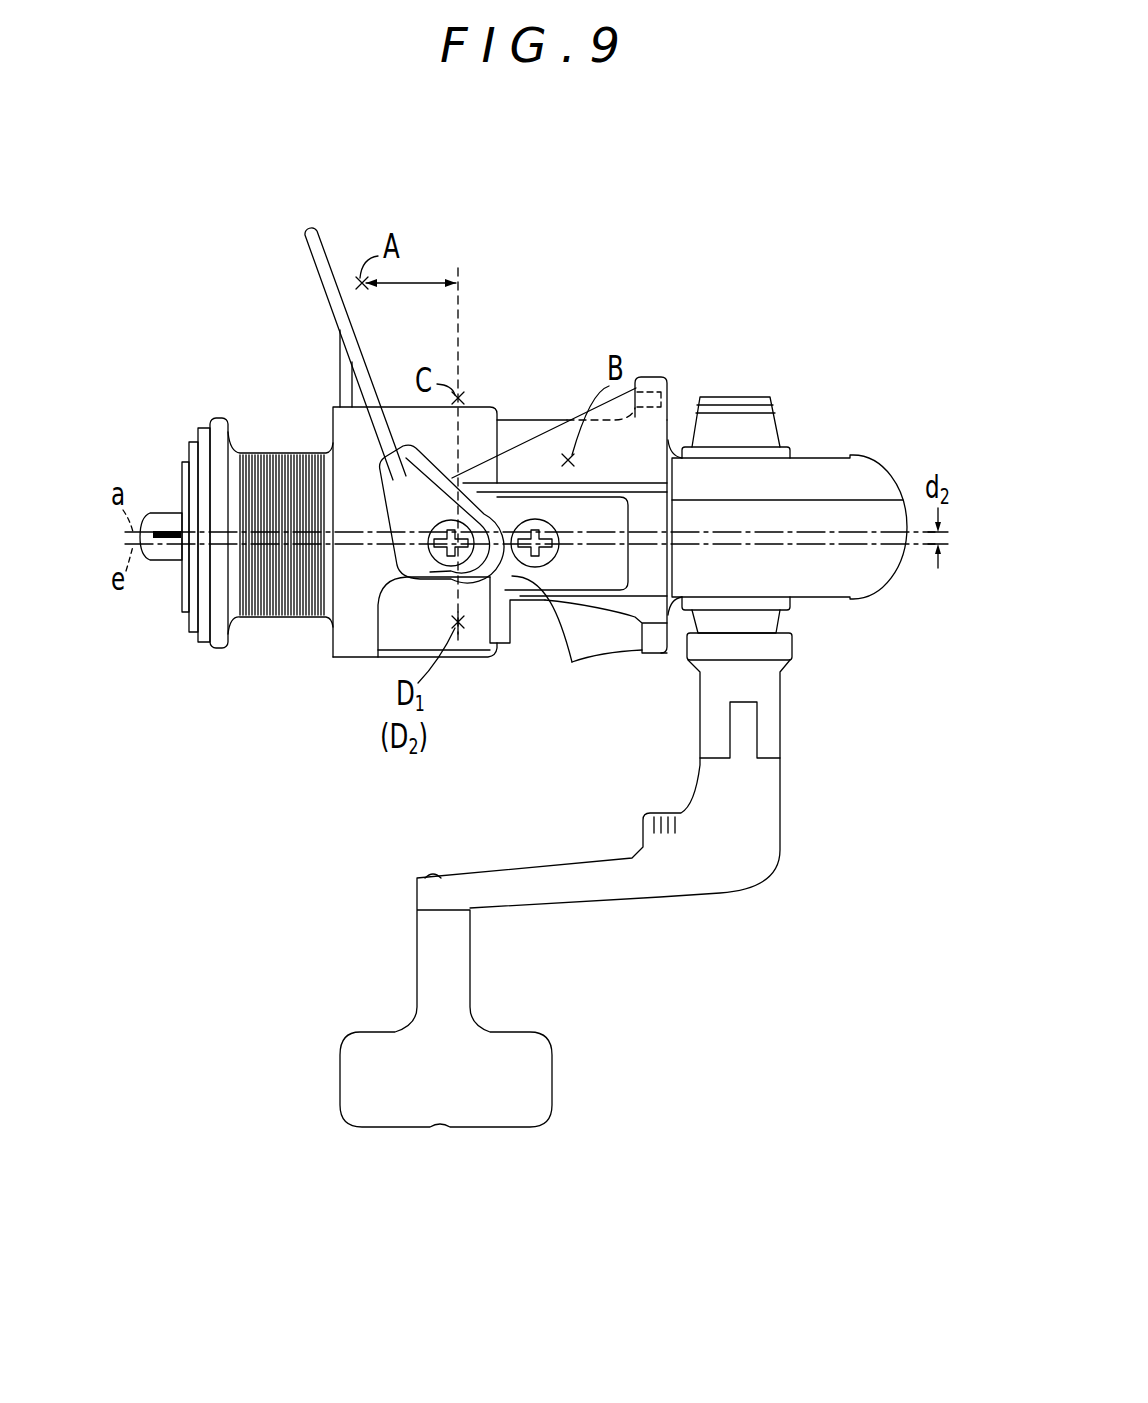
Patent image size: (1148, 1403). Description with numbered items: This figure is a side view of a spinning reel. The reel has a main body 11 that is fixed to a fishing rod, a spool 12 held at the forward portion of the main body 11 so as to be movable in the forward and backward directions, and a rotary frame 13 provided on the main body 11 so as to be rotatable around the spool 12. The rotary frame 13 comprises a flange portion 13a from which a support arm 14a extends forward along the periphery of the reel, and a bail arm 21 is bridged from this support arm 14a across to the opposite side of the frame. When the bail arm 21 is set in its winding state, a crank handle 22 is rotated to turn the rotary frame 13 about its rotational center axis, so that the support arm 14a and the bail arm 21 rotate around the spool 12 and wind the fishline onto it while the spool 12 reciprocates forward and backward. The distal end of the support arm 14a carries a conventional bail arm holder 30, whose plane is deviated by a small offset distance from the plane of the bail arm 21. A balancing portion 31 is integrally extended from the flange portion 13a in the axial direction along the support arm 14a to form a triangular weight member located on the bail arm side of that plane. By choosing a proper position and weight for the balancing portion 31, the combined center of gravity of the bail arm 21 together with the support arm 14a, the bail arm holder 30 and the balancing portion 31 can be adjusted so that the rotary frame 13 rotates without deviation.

The main body 11 is at (837, 468).
The spool 12 is at (273, 618).
The rotary frame 13 is at (676, 406).
The flange portion 13a is at (655, 376).
The support arm 14a is at (610, 580).
The bail arm 21 is at (317, 233).
The crank handle 22 is at (765, 827).
The bail arm holder 30 is at (426, 480).
The balancing portion 31 is at (560, 432).